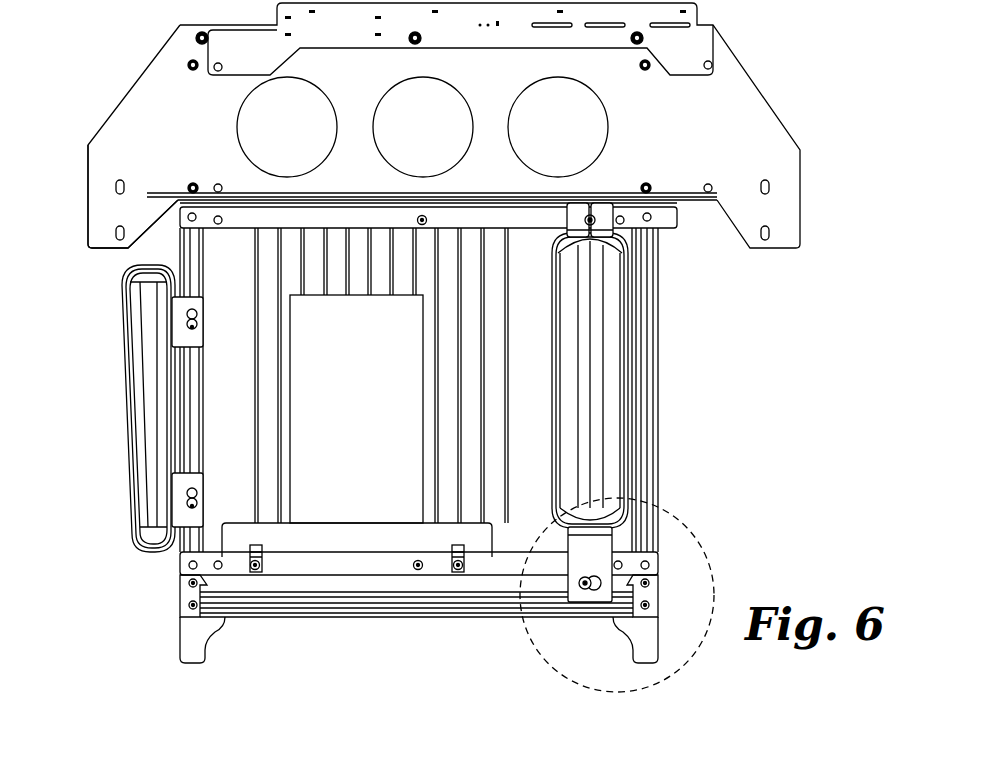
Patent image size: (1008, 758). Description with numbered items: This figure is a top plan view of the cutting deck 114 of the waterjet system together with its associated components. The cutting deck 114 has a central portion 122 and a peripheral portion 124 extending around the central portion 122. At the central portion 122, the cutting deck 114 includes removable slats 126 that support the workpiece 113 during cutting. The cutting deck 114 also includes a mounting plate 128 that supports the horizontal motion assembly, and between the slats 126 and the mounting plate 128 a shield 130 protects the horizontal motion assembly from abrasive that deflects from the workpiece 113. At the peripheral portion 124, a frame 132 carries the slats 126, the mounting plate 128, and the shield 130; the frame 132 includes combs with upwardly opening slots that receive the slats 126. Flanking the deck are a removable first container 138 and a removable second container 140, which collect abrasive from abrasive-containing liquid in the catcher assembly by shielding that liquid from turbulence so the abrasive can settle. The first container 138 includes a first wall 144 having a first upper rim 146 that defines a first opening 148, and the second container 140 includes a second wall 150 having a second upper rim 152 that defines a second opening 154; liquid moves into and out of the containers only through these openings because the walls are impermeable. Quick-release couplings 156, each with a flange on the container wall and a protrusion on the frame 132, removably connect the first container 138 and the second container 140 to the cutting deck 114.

The cutting deck 114 is at (808, 76).
The peripheral portion 124 is at (153, 244).
The mounting plate 128 is at (662, 147).
The shield 130 is at (335, 193).
The central portion 122 is at (381, 310).
The workpiece 113 is at (329, 411).
The removable slats 126 is at (433, 455).
The frame 132 is at (373, 610).
The second container 140 is at (543, 483).
The first container 138 is at (108, 412).
The first wall 144 is at (123, 367).
The first upper rim 146 is at (148, 408).
The first opening 148 is at (150, 445).
The second wall 150 is at (623, 348).
The second upper rim 152 is at (590, 373).
The second opening 154 is at (594, 431).
The quick-release coupling 156 is at (604, 579).